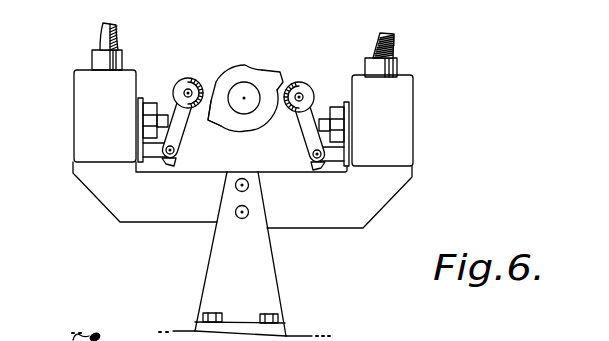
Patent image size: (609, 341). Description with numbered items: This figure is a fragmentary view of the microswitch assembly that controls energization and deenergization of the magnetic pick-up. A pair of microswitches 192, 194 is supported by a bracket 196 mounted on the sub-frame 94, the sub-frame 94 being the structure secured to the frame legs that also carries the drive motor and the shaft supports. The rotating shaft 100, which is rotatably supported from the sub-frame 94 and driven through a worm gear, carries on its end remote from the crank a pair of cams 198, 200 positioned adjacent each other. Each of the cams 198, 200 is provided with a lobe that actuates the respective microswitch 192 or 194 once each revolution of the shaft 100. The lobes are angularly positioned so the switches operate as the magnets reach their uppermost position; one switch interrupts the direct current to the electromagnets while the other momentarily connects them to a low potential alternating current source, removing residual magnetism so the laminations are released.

The sub-frame 94 is at (292, 334).
The shaft 100 is at (242, 90).
The microswitch 192 is at (73, 122).
The microswitch 194 is at (402, 122).
The bracket 196 is at (265, 258).
The cam 198 is at (213, 121).
The cam 200 is at (284, 73).